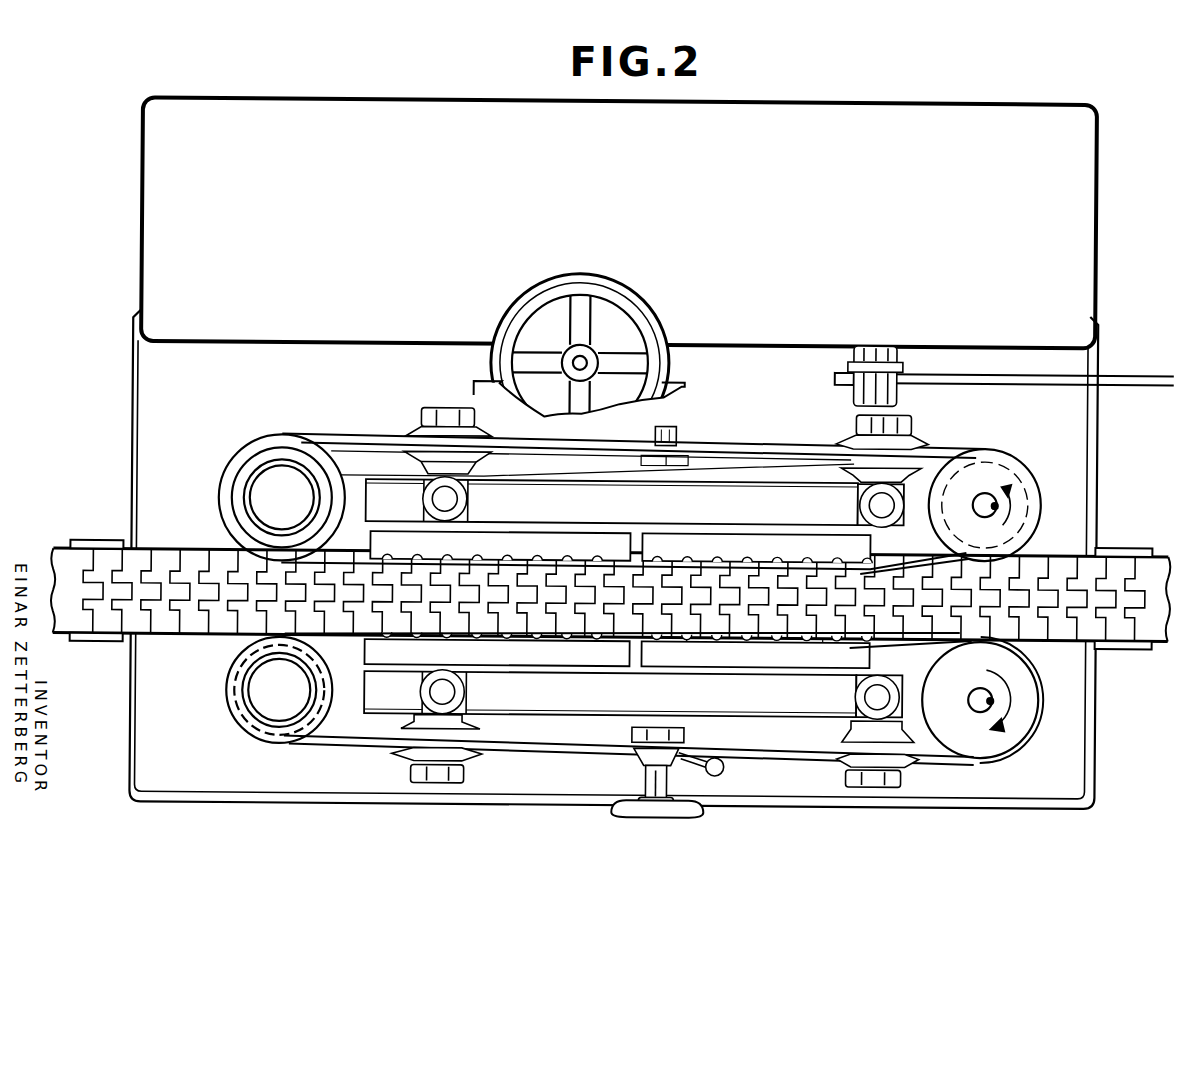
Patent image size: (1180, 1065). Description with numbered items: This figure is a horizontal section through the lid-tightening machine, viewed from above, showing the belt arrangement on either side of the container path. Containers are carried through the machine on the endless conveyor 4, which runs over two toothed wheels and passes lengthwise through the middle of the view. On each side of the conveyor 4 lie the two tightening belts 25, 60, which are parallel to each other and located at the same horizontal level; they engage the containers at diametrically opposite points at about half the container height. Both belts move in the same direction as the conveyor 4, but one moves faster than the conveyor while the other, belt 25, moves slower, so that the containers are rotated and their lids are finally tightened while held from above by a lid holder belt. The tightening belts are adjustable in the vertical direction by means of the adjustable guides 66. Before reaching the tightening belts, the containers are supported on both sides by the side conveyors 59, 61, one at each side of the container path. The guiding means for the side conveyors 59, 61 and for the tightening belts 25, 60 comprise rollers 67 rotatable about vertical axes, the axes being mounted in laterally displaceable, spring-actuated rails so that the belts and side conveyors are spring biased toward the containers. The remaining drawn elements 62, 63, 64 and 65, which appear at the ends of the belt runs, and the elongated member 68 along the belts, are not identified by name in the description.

The endless conveyor 4 is at (171, 579).
The tightening belt 25 is at (302, 567).
The side conveyor 59 is at (620, 546).
The tightening belt 60 is at (344, 642).
The side conveyor 61 is at (356, 634).
The lower drive pulley 62 is at (1022, 708).
The upper drive pulley 63 is at (996, 470).
The upper idler pulley 64 is at (256, 500).
The lower idler pulley 65 is at (262, 700).
The adjustable guides 66 is at (705, 515).
The rollers 67 is at (455, 574).
The guide bar 68 is at (533, 545).